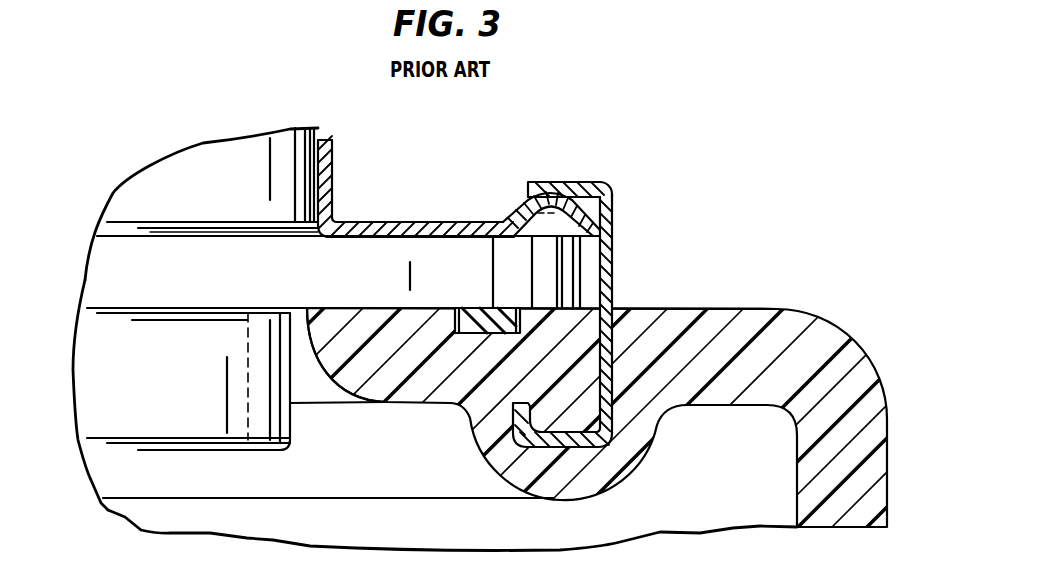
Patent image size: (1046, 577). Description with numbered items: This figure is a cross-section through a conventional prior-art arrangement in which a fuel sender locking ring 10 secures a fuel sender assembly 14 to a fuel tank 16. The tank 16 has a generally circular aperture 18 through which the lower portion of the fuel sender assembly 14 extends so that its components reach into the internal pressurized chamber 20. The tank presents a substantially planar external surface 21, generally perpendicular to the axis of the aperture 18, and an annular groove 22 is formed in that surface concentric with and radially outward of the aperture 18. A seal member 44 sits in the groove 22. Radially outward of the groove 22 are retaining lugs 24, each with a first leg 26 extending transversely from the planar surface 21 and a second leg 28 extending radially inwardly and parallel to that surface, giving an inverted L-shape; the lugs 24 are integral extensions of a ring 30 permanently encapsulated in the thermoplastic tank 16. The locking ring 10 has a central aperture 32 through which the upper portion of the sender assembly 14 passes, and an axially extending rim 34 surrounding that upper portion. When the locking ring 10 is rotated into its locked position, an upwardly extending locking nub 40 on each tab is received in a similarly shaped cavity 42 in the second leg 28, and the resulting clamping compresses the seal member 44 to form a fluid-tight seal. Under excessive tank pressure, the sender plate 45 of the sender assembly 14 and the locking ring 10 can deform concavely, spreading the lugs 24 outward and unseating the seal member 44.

The fuel sender locking ring 10 is at (407, 216).
The fuel sender assembly 14 is at (220, 156).
The fuel tank 16 is at (782, 370).
The aperture 18 is at (307, 315).
The internal pressurized chamber 20 is at (396, 474).
The planar external surface 21 is at (730, 308).
The annular groove 22 is at (506, 310).
The retaining lugs 24 is at (612, 250).
The first leg 26 is at (610, 377).
The second leg 28 is at (557, 182).
The ring 30 is at (613, 276).
The central aperture 32 is at (333, 155).
The axially extending rim 34 is at (334, 192).
The locking nub 40 is at (519, 215).
The cavity 42 is at (530, 199).
The seal member 44 is at (473, 307).
The sender plate 45 is at (327, 284).